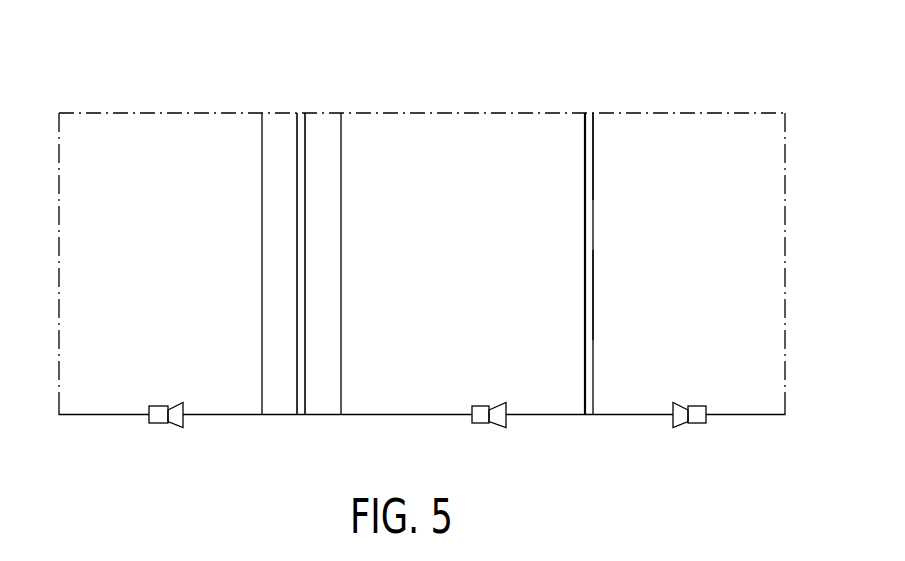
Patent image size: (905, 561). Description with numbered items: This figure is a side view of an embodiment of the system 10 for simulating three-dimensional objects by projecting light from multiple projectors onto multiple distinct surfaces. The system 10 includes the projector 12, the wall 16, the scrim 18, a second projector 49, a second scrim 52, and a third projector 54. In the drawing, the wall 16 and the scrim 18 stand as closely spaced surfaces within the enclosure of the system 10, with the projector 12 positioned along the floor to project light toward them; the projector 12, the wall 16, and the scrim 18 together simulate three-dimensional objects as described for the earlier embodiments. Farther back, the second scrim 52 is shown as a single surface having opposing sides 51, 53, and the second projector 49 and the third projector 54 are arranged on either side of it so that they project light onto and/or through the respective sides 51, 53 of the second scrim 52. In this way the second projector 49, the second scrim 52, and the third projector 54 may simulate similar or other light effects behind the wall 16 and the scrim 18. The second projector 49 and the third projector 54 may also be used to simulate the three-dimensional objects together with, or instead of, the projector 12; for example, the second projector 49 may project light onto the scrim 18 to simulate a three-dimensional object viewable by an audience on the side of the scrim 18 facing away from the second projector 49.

The system 10 is at (486, 60).
The projector 12 is at (160, 437).
The wall 16 is at (324, 208).
The scrim 18 is at (302, 140).
The second projector 49 is at (473, 437).
The side of second scrim 51 is at (583, 264).
The second scrim 52 is at (590, 143).
The side of second scrim 53 is at (594, 302).
The third projector 54 is at (683, 437).